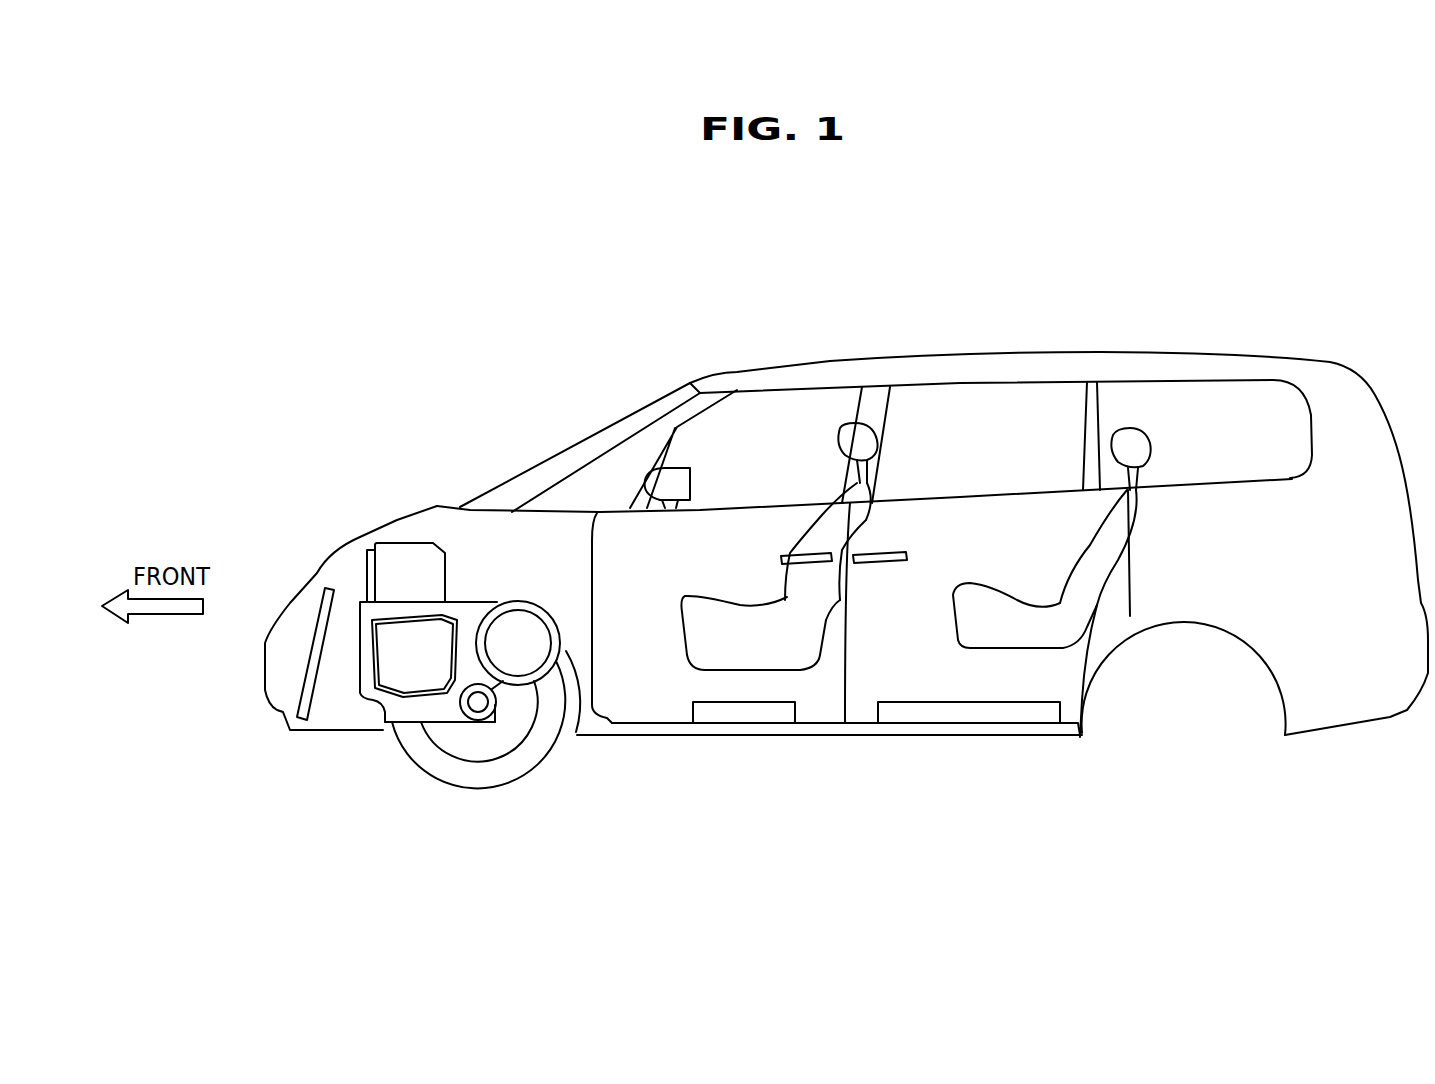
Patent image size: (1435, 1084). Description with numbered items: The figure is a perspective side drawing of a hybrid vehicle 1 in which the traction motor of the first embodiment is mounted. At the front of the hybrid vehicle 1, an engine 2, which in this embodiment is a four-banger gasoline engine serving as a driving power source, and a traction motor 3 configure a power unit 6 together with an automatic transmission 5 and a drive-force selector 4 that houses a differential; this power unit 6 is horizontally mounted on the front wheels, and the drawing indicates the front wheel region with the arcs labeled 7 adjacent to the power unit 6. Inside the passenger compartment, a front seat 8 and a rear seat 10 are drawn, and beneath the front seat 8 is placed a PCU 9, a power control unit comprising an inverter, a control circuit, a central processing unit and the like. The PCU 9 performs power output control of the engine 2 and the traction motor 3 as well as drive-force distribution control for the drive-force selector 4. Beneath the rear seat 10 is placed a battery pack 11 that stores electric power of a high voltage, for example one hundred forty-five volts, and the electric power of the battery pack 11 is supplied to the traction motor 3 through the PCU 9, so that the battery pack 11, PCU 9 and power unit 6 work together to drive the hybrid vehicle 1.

The hybrid vehicle 1 is at (1186, 284).
The engine 2 is at (407, 570).
The traction motor 3 is at (527, 653).
The drive-force selector 4 is at (413, 707).
The automatic transmission 5 is at (403, 667).
The power unit 6 is at (456, 732).
The front wheel 7 is at (440, 768).
The front seat 8 is at (737, 603).
The PCU (Power Control Unit) 9 is at (737, 717).
The rear seat 10 is at (1015, 608).
The battery pack 11 is at (960, 710).